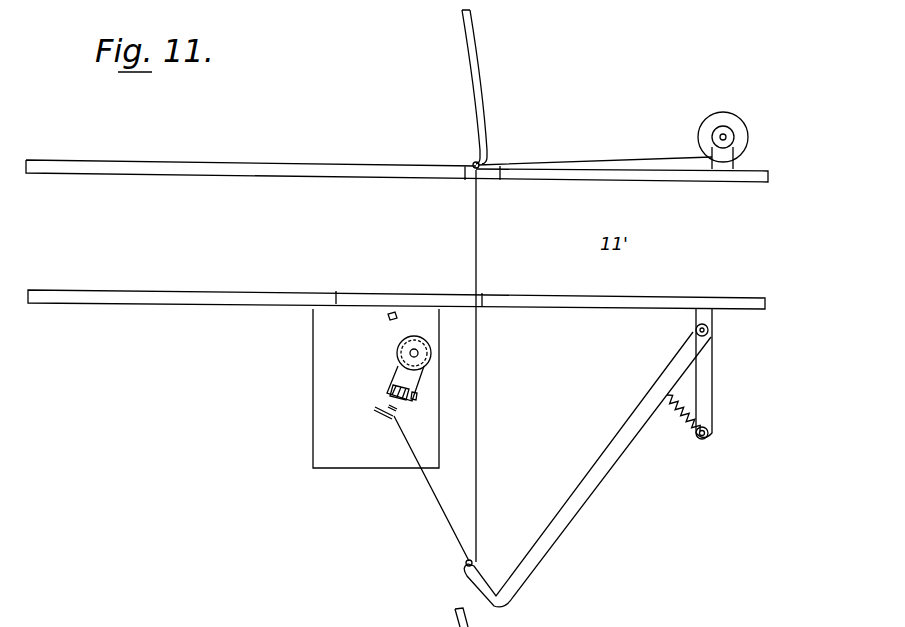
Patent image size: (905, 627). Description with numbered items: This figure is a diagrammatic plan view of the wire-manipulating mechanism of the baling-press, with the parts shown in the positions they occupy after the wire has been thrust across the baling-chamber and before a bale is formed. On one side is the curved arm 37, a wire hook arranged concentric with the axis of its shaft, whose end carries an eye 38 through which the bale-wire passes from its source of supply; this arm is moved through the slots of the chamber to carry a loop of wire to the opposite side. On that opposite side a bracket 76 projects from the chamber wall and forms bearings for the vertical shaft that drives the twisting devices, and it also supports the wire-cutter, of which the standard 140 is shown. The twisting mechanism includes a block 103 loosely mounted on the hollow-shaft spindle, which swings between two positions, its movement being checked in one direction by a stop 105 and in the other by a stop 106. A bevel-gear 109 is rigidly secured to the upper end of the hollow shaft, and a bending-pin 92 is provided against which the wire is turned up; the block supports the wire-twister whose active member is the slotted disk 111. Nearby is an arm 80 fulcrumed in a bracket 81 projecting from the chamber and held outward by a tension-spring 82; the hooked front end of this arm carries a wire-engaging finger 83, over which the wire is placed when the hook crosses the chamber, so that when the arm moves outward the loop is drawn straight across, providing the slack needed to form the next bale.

The curved arm 37 is at (476, 72).
The eye 38 is at (472, 161).
The bracket 76 is at (322, 399).
The stop 106 is at (388, 317).
The bending-pin 92 is at (410, 353).
The bevel-gear 109 is at (431, 353).
The block 103 is at (403, 376).
The disk 111 is at (388, 393).
The stop 105 is at (417, 397).
The standard 140 is at (397, 416).
The bracket 81 is at (703, 410).
The arm 80 is at (574, 500).
The tension-spring 82 is at (680, 417).
The wire-engaging finger 83 is at (466, 563).